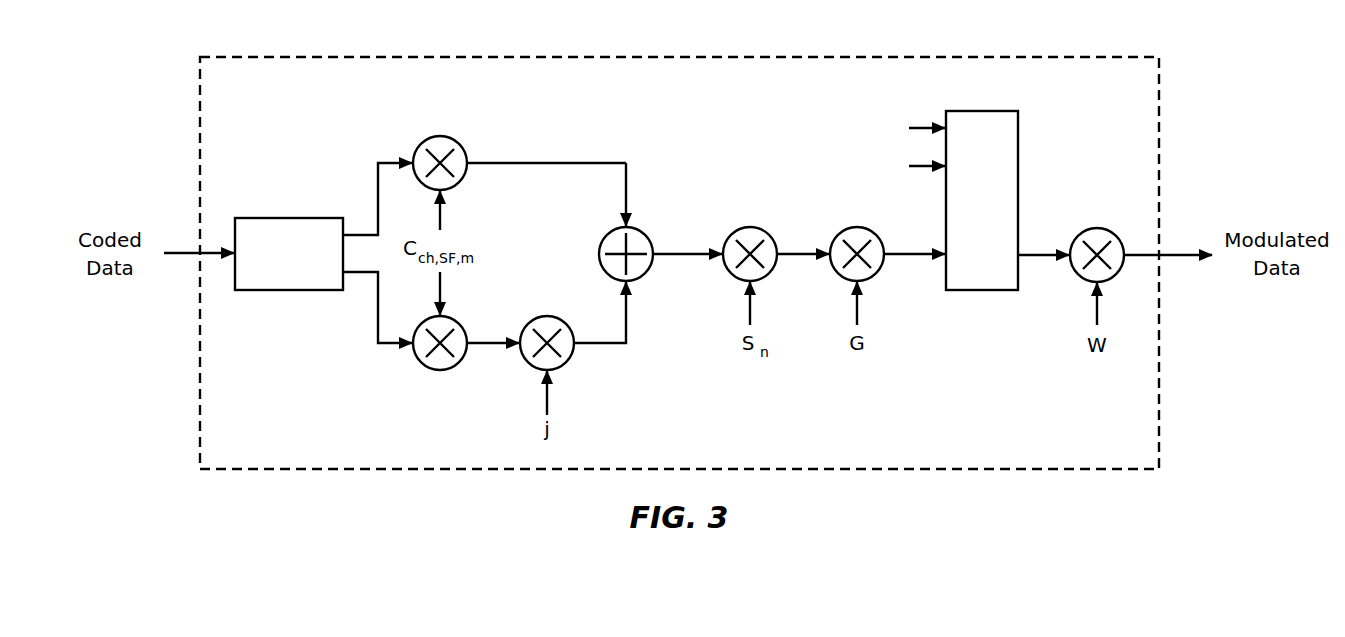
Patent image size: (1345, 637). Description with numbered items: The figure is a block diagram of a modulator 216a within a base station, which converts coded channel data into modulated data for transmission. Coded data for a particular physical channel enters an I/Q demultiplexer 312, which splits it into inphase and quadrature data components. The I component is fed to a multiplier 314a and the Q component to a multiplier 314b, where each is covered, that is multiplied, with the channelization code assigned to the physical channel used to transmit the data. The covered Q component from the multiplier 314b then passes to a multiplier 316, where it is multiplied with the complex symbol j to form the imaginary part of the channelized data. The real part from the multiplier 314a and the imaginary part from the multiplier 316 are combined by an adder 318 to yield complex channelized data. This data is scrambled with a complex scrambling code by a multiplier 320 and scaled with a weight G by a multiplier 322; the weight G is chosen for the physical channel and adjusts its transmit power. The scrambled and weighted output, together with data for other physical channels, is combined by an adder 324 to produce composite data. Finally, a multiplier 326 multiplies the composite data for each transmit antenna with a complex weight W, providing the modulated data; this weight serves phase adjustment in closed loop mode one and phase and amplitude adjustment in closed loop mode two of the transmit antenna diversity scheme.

The modulator 216a is at (672, 58).
The I/Q demultiplexer 312 is at (286, 218).
The multiplier 314a is at (435, 137).
The multiplier 314b is at (430, 369).
The multiplier 316 is at (541, 317).
The adder 318 is at (613, 235).
The multiplier 320 is at (745, 228).
The multiplier 322 is at (851, 228).
The adder 324 is at (978, 110).
The multiplier 326 is at (1091, 229).